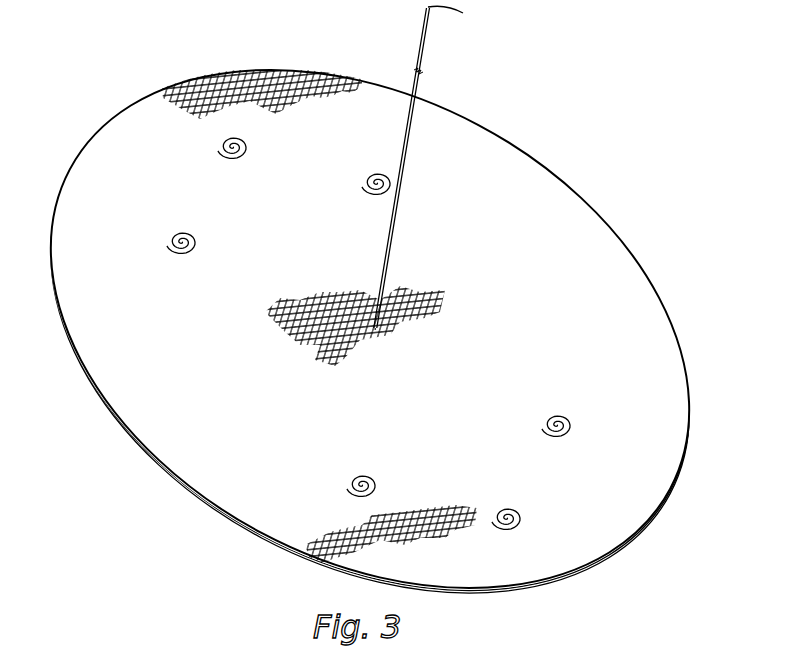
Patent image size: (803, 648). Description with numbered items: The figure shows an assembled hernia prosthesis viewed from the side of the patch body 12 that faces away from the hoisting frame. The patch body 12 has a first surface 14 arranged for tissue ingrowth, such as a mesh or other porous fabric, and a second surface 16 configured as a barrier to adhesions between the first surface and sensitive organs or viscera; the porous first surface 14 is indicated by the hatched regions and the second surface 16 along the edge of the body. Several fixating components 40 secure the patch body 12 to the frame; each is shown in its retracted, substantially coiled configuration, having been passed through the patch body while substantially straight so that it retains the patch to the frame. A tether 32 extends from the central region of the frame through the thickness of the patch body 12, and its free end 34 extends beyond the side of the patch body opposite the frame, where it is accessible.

The patch body 12 is at (106, 118).
The first surface 14 is at (218, 73).
The second surface 16 is at (513, 596).
The tether 32 is at (413, 116).
The free end 34 is at (462, 22).
The fixating component 40 is at (174, 225).